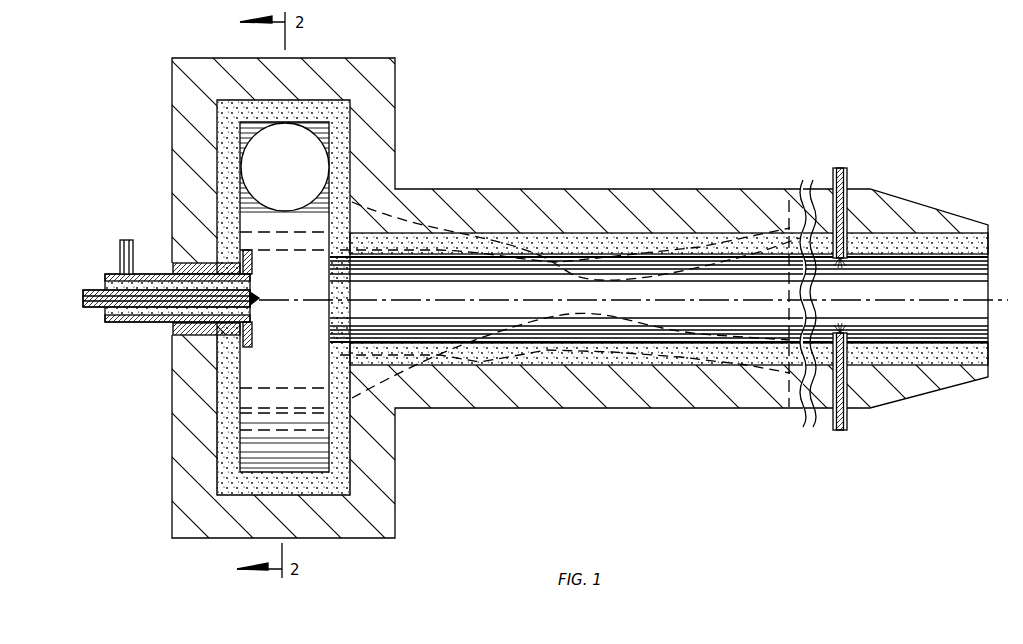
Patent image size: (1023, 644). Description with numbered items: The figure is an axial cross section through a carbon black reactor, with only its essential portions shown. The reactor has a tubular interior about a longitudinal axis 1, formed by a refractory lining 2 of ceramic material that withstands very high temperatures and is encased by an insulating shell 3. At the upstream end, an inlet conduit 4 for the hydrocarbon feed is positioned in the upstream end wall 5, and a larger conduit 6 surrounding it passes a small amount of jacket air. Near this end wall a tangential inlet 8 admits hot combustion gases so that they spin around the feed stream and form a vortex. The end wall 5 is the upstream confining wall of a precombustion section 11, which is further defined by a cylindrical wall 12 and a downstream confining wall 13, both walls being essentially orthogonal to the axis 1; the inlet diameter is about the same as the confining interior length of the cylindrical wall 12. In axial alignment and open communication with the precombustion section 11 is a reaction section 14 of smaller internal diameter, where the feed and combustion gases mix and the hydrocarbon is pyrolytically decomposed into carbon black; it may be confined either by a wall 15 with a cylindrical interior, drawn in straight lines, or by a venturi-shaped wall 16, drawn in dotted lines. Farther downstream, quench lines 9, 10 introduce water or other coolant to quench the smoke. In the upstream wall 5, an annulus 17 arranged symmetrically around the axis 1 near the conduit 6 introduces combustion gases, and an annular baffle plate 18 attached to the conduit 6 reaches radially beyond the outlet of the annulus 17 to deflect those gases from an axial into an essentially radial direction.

The longitudinal axis 1 is at (688, 300).
The refractory lining 2 is at (368, 343).
The insulating shell 3 is at (529, 403).
The inlet conduit 4 is at (260, 303).
The upstream end wall 5 is at (240, 407).
The larger conduit 6 is at (160, 273).
The tangential inlet 8 is at (285, 212).
The quench line 9 is at (847, 171).
The quench line 10 is at (847, 426).
The precombustion section 11 is at (292, 294).
The cylindrical wall 12 is at (278, 495).
The downstream confining wall 13 is at (328, 406).
The reaction section 14 is at (464, 294).
The wall with cylindrical interior 15 is at (395, 260).
The venturi-shaped wall 16 is at (563, 322).
The annulus 17 is at (170, 327).
The baffle plate 18 is at (252, 268).